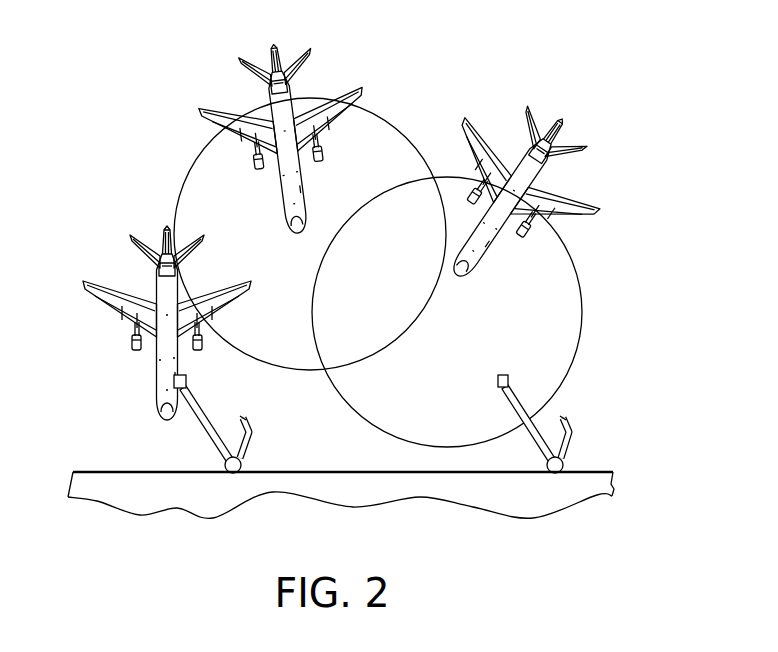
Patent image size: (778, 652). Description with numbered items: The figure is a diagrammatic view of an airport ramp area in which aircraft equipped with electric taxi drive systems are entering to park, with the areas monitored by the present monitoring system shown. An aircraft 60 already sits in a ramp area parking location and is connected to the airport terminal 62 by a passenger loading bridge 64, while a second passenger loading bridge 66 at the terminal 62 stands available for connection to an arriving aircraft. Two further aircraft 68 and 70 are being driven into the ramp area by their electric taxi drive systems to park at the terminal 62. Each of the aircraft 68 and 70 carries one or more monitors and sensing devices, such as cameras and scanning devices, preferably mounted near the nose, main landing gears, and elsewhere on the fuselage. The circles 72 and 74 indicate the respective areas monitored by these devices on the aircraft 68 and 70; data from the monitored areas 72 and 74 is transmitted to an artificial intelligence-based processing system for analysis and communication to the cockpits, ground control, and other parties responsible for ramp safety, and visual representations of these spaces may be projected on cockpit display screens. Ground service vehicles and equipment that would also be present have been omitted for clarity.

The aircraft 60 is at (128, 382).
The airport terminal 62 is at (308, 485).
The passenger loading bridge 64 is at (207, 430).
The passenger loading bridge 66 is at (534, 438).
The aircraft 68 is at (208, 77).
The aircraft 70 is at (589, 124).
The monitored area 72 is at (188, 175).
The monitored area 74 is at (582, 312).